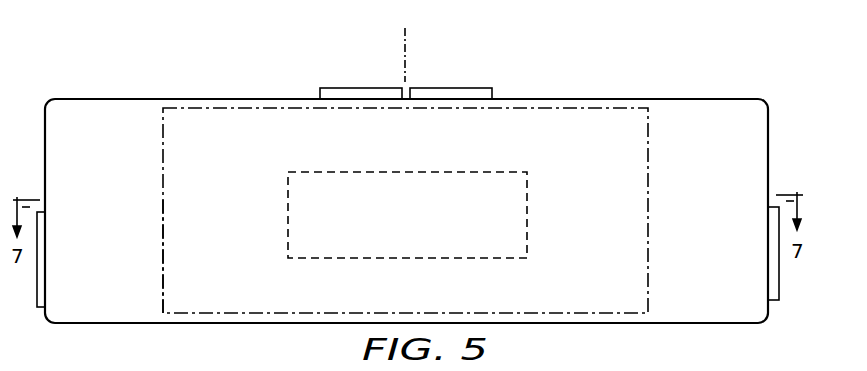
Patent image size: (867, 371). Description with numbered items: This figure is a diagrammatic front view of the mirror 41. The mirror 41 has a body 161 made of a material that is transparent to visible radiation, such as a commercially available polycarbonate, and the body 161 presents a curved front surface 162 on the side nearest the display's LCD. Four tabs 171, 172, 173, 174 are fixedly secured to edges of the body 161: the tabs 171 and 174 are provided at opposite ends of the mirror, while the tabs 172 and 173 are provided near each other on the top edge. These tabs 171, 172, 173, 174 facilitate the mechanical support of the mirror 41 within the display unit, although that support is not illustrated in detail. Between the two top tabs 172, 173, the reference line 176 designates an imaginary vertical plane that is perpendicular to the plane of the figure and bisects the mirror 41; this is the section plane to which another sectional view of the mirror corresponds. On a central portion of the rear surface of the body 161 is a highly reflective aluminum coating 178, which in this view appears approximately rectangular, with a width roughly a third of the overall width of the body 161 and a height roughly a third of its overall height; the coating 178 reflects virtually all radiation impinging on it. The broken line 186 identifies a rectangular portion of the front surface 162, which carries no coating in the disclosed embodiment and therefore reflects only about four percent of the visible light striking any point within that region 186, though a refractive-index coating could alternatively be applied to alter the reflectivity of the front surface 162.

The mirror 41 is at (700, 97).
The body 161 is at (715, 315).
The front surface 162 is at (220, 127).
The tab 171 is at (42, 308).
The tab 172 is at (335, 88).
The tab 173 is at (481, 88).
The tab 174 is at (773, 296).
The imaginary vertical plane 176 is at (408, 38).
The aluminum coating 178 is at (527, 210).
The broken line 186 is at (165, 243).